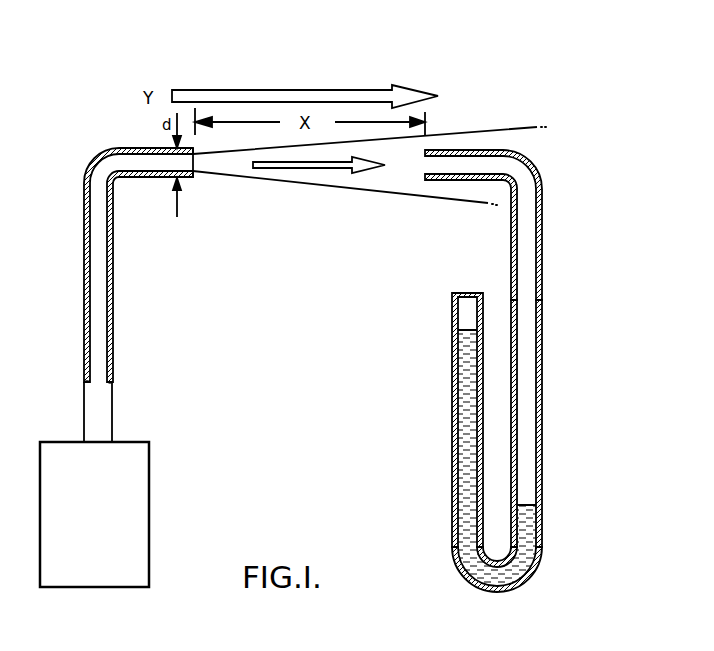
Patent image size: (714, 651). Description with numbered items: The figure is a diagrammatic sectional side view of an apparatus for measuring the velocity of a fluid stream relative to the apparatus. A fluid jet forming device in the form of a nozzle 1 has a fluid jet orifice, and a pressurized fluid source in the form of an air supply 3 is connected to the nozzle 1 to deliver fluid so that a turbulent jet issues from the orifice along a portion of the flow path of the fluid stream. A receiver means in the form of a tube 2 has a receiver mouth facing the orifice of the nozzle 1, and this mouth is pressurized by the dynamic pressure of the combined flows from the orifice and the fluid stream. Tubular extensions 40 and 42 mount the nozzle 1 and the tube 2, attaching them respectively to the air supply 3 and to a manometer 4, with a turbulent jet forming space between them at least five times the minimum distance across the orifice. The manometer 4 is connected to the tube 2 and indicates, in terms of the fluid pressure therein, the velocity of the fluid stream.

The nozzle 1 is at (158, 178).
The tube 2 is at (467, 182).
The air supply 3 is at (142, 508).
The manometer 4 is at (452, 375).
The tubular extension 40 is at (112, 340).
The tubular extension 42 is at (537, 345).